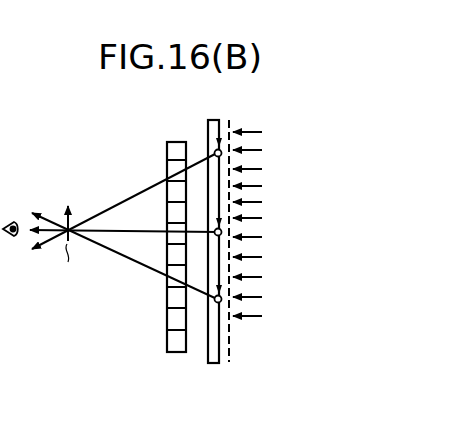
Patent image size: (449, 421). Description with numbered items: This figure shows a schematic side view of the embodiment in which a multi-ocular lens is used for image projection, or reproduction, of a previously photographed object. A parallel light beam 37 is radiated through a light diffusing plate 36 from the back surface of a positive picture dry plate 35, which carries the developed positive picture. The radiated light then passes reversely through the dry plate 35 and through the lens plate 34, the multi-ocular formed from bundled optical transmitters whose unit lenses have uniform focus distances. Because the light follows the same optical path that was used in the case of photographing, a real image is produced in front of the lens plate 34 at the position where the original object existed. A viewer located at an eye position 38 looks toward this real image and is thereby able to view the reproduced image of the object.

The lens plate 34 is at (177, 140).
The positive picture dry plate 35 is at (213, 119).
The light diffusing plate 36 is at (230, 354).
The parallel light beam 37 is at (263, 129).
The eye position 38 is at (13, 237).